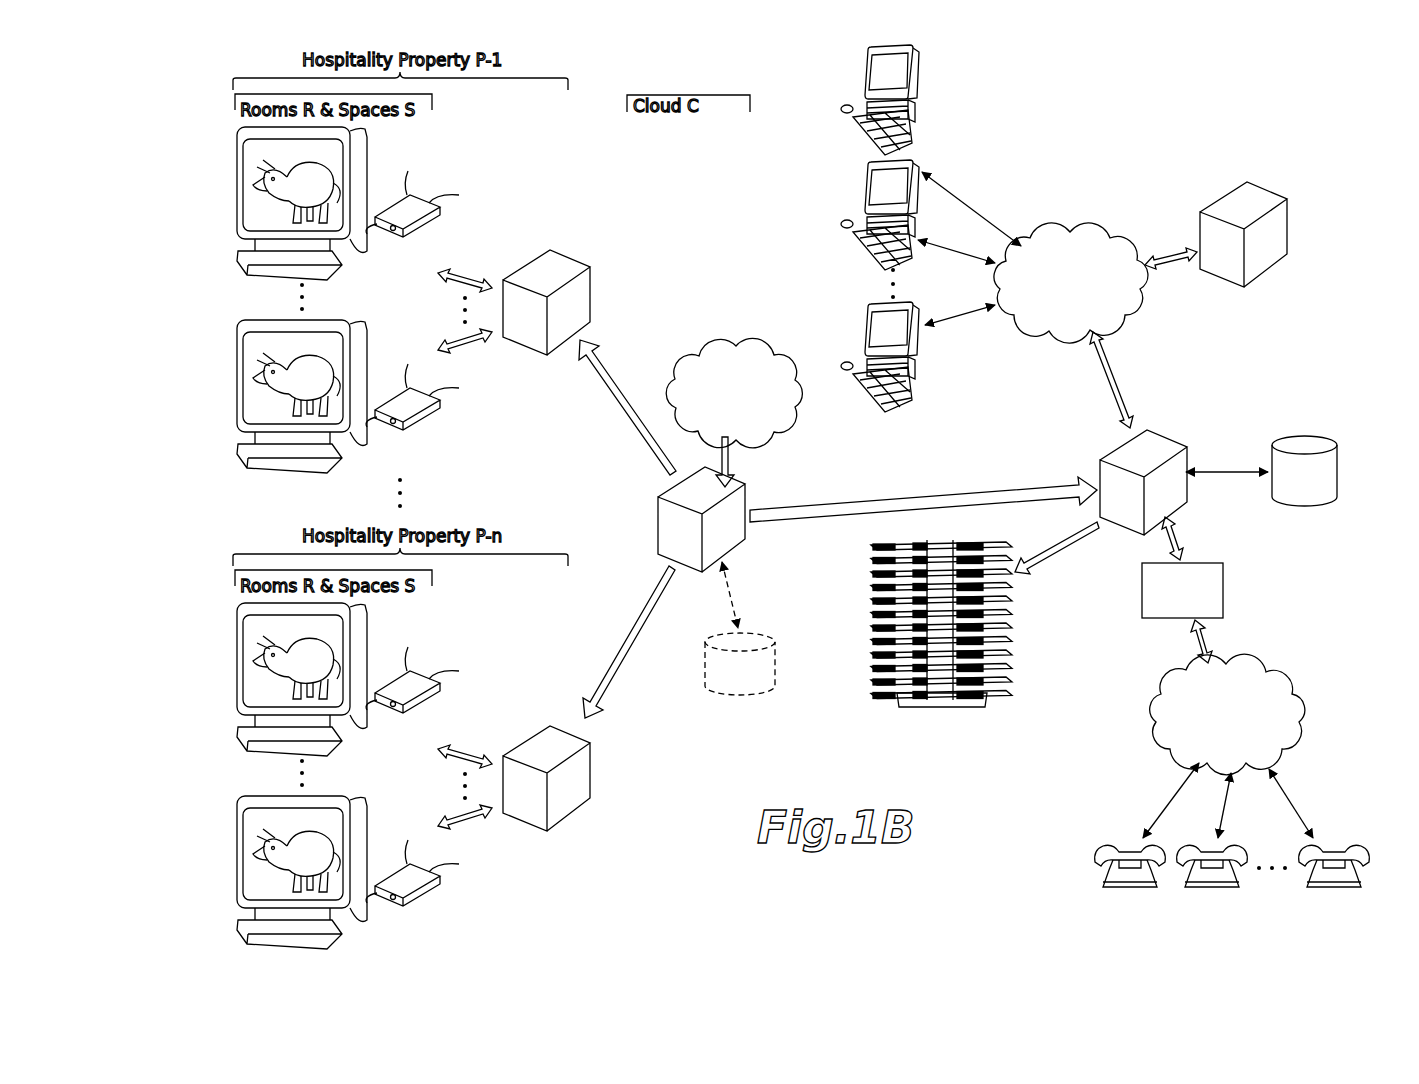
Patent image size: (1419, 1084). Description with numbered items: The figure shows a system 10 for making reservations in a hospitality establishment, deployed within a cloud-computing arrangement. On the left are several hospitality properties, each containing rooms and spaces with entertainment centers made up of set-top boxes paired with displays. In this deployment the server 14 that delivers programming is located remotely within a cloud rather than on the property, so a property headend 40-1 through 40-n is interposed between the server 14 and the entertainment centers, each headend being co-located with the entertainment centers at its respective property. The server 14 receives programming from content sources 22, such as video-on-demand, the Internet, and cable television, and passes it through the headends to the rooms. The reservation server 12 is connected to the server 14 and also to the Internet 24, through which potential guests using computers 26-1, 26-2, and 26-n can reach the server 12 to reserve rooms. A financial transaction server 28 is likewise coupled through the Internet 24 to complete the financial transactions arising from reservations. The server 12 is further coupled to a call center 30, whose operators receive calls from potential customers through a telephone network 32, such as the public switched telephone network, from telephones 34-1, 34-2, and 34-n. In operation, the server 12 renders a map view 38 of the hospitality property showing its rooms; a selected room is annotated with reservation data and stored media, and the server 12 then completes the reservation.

The system 10 is at (170, 136).
The server 12 is at (1160, 440).
The server 14 is at (737, 500).
The content sources 22 is at (712, 348).
The Internet 24 is at (1077, 238).
The computer 26-1 is at (866, 72).
The computer 26-2 is at (866, 190).
The computer 26-n is at (866, 330).
The financial transaction server 28 is at (1256, 190).
The call center 30 is at (1225, 588).
The telephone network 32 is at (1302, 712).
The telephone 34-1 is at (1130, 890).
The telephone 34-2 is at (1212, 890).
The telephone 34-n is at (1335, 890).
The map view 38 is at (862, 586).
The property headend 40-1 is at (570, 248).
The property headend 40-n is at (570, 724).